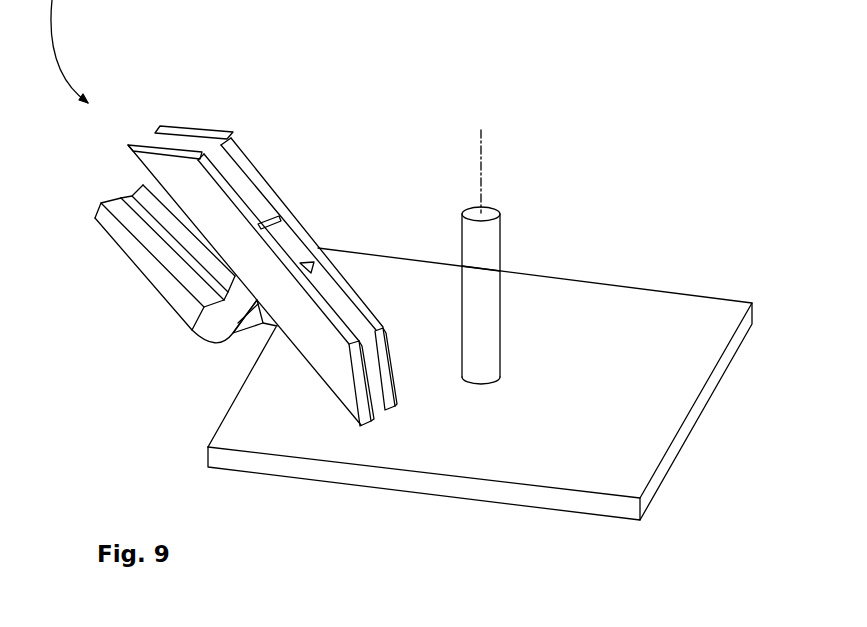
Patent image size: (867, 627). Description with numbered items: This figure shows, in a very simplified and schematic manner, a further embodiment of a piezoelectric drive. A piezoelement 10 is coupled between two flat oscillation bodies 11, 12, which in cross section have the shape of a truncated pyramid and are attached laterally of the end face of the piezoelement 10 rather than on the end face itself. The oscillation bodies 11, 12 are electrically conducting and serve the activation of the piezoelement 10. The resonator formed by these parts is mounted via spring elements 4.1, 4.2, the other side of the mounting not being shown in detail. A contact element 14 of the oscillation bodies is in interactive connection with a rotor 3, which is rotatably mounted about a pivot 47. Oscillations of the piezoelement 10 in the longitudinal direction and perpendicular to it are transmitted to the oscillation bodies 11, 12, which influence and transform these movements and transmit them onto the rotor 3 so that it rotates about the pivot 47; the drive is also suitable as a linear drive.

The rotor 3 is at (585, 375).
The pivot 47 is at (481, 157).
The piezoelement 10 is at (232, 309).
The oscillation body 11 is at (148, 158).
The oscillation body 12 is at (230, 163).
The spring element 4.1 is at (128, 238).
The spring element 4.2 is at (182, 262).
The contact element 14 is at (387, 423).